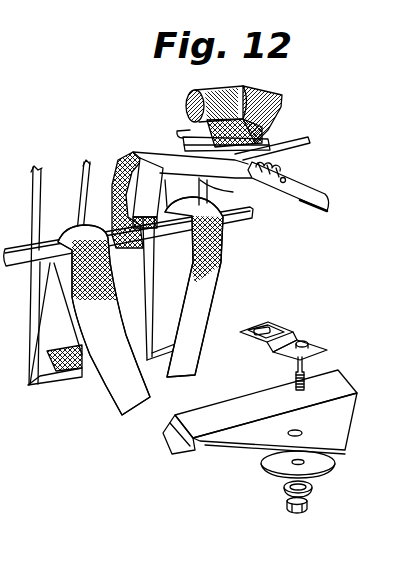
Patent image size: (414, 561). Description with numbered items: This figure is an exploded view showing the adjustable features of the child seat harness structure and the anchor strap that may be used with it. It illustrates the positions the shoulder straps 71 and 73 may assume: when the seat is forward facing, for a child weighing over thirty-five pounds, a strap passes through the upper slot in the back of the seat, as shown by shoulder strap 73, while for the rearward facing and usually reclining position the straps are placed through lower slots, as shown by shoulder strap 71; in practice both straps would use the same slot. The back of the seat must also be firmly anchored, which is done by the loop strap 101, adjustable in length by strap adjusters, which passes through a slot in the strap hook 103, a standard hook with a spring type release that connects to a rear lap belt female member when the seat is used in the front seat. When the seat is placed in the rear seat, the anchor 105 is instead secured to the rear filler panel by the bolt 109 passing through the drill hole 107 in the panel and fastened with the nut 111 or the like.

The shoulder strap 71 is at (118, 372).
The shoulder strap 73 is at (212, 287).
The loop strap 101 is at (136, 152).
The strap hook 103 is at (310, 188).
The anchor 105 is at (287, 330).
The drill hole 107 is at (303, 433).
The bolt 109 is at (297, 367).
The nut 111 is at (310, 505).